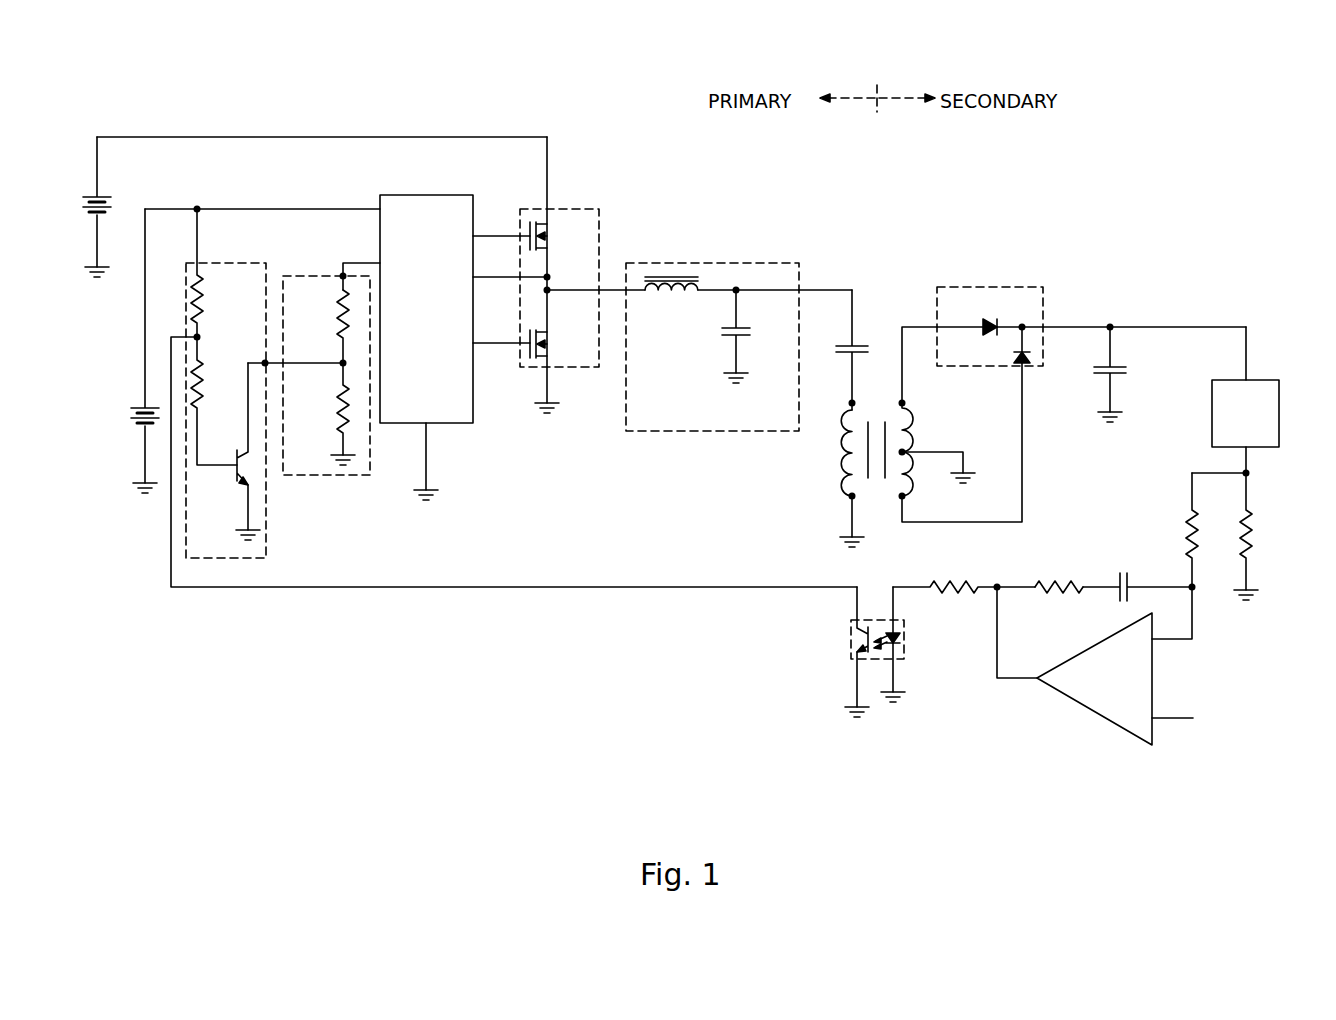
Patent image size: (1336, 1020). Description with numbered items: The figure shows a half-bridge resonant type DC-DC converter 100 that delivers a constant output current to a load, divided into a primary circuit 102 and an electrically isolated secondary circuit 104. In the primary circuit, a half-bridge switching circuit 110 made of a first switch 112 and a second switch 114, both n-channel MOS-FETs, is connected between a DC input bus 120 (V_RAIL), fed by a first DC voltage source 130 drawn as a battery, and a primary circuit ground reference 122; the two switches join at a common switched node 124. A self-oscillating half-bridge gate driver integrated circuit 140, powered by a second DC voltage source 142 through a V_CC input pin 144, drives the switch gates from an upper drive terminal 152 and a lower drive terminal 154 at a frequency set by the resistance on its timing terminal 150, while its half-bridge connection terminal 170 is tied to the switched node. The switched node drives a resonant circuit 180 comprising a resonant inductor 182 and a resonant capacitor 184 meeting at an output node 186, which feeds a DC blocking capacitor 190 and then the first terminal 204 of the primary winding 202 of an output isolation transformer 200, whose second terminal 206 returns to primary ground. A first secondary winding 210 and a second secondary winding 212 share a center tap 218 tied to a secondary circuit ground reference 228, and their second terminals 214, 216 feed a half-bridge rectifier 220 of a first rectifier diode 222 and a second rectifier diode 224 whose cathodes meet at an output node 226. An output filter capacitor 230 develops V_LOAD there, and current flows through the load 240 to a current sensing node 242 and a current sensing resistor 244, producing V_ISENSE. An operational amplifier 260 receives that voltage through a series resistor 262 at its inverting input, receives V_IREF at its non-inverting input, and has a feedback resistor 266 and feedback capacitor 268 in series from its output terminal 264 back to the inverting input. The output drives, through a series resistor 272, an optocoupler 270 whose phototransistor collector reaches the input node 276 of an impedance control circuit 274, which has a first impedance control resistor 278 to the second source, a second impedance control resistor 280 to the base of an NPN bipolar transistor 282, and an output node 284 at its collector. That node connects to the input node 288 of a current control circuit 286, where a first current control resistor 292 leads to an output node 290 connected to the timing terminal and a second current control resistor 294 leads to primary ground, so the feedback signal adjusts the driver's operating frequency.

The half-bridge resonant type DC-DC converter 100 is at (1154, 247).
The primary circuit 102 is at (801, 197).
The secondary circuit 104 is at (955, 197).
The half-bridge switching circuit 110 is at (561, 270).
The first switch 112 is at (542, 242).
The second switch 114 is at (542, 350).
The DC input bus 120 is at (316, 137).
The primary circuit ground reference 122 is at (98, 265).
The common switched node 124 is at (549, 288).
The first DC voltage source 130 is at (99, 190).
The self-oscillating half-bridge gate driver integrated circuit 140 is at (401, 195).
The second DC voltage source 142 is at (145, 407).
The V_CC input pin 144 is at (380, 209).
The timing terminal (RT) 150 is at (380, 263).
The upper drive terminal (MU) 152 is at (478, 236).
The lower drive terminal (ML) 154 is at (477, 346).
The half-bridge connection terminal (HB) 170 is at (477, 280).
The resonant circuit 180 is at (699, 331).
The resonant inductor 182 is at (670, 293).
The resonant capacitor 184 is at (741, 334).
The output node 186 is at (739, 292).
The DC blocking capacitor 190 is at (858, 346).
The output isolation transformer 200 is at (915, 448).
The primary winding 202 is at (850, 452).
The first terminal 204 is at (850, 402).
The second terminal 206 is at (850, 492).
The first secondary winding 210 is at (904, 440).
The second secondary winding 212 is at (903, 470).
The second terminal of first secondary winding 214 is at (903, 402).
The second terminal of second secondary winding 216 is at (879, 490).
The center tap 218 is at (905, 451).
The half-bridge rectifier 220 is at (1091, 327).
The first rectifier diode 222 is at (985, 326).
The second rectifier diode 224 is at (1021, 364).
The output node 226 is at (1026, 325).
The secondary circuit ground reference 228 is at (965, 472).
The output filter capacitor 230 is at (1096, 368).
The load 240 is at (1258, 381).
The current sensing node 242 is at (1250, 478).
The current sensing resistor 244 is at (1252, 530).
The operational amplifier 260 is at (1110, 666).
The series resistor 262 is at (1186, 530).
The output terminal 264 is at (1036, 682).
The feedback resistor 266 is at (1062, 596).
The feedback capacitor 268 is at (1120, 582).
The optocoupler 270 is at (851, 640).
The series resistor 272 is at (965, 586).
The impedance control circuit 274 is at (514, 398).
The input node 276 is at (200, 340).
The first impedance control resistor 278 is at (200, 302).
The second impedance control resistor 280 is at (198, 395).
The NPN bipolar transistor 282 is at (237, 468).
The output node 284 is at (200, 340).
The current control circuit 286 is at (318, 374).
The input node 288 is at (343, 362).
The output node 290 is at (343, 275).
The first current control resistor 292 is at (343, 325).
The second current control resistor 294 is at (342, 422).